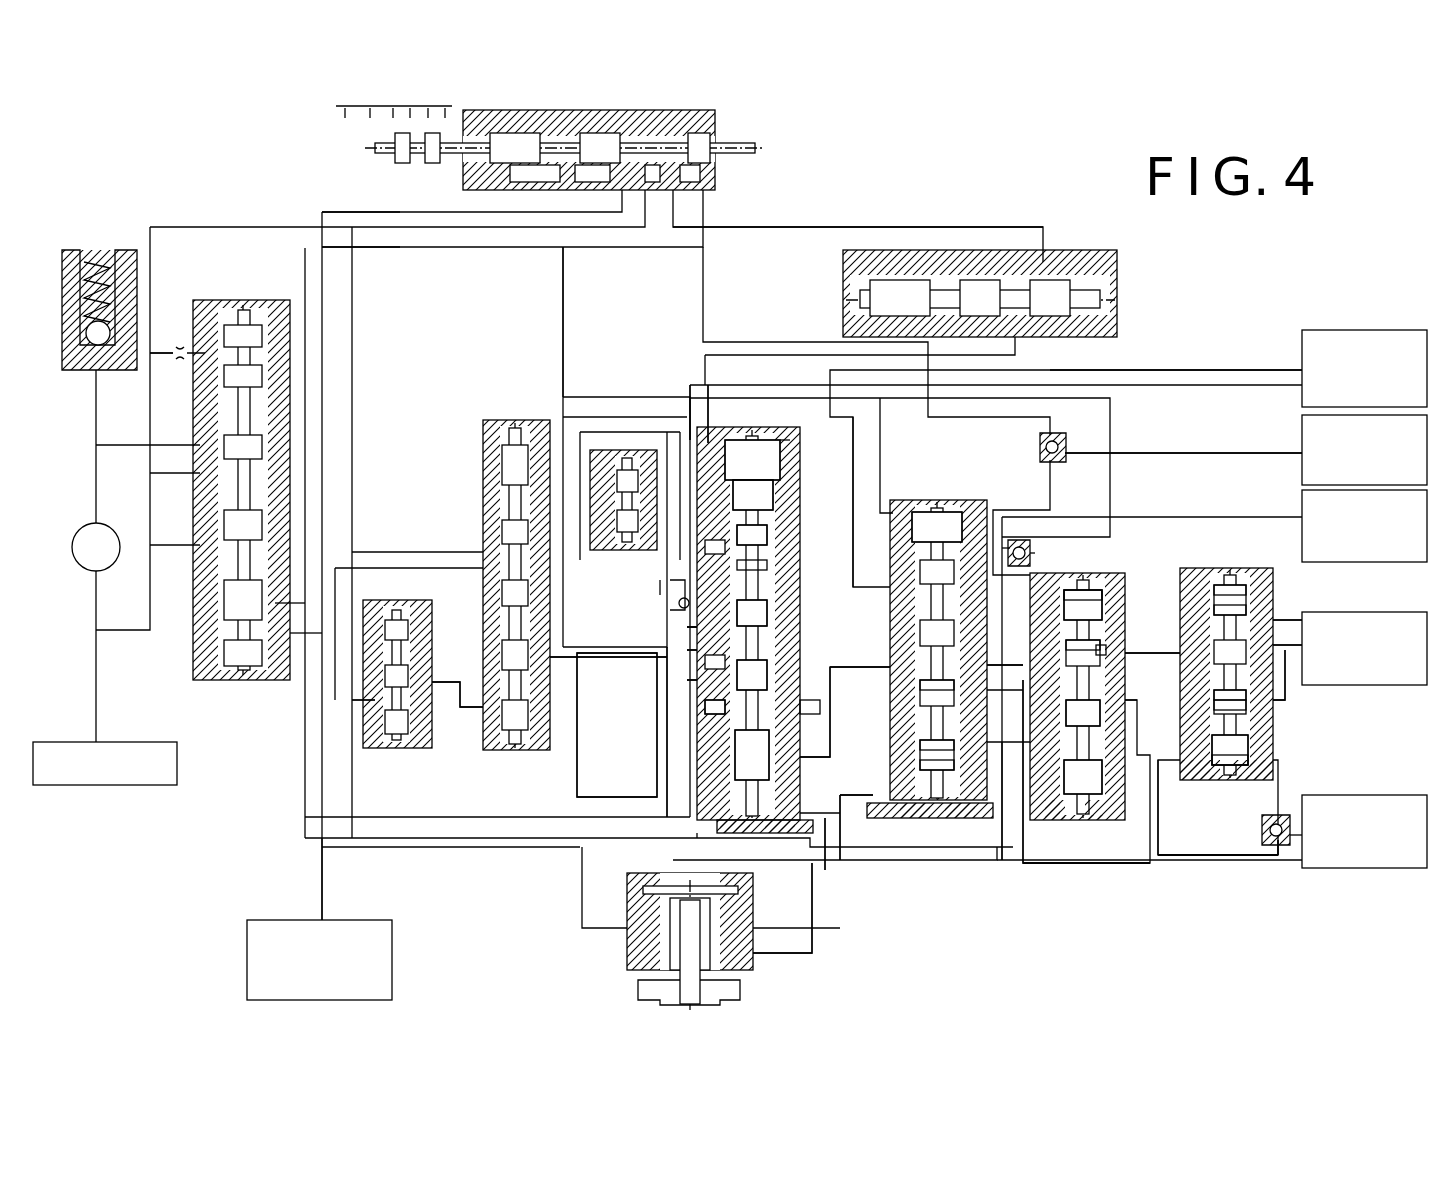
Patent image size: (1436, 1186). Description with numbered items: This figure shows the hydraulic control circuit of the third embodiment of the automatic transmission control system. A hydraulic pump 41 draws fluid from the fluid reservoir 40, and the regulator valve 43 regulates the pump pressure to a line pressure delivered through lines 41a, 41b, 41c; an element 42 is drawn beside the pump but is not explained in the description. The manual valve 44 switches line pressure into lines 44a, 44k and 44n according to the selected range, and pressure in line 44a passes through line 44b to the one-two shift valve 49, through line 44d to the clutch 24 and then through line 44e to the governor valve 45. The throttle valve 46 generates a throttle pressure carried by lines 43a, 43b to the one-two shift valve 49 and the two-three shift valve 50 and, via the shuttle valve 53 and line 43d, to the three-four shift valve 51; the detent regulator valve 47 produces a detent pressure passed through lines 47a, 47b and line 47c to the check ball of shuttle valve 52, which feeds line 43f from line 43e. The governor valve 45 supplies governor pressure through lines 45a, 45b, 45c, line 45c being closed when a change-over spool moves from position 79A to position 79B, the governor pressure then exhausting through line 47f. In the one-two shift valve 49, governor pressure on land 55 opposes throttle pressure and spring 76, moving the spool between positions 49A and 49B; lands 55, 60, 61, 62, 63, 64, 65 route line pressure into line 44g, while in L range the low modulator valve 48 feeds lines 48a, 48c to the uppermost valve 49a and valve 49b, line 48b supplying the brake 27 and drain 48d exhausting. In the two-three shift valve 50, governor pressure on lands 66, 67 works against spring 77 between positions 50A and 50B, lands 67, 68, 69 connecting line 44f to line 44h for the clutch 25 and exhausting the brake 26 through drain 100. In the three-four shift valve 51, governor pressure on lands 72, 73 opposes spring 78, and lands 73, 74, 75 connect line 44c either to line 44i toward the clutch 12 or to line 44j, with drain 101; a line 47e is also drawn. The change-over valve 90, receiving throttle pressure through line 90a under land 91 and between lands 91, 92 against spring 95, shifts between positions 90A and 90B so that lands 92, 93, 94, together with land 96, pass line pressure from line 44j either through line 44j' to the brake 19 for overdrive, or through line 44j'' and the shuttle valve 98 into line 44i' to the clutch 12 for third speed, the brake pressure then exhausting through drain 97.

The clutch 12 is at (1383, 795).
The brake 19 is at (1383, 612).
The clutch 24 is at (392, 960).
The clutch 25 is at (1302, 437).
The brake 26 is at (1302, 512).
The brake 27 is at (1333, 330).
The fluid reservoir 40 is at (112, 790).
The hydraulic pump 41 is at (72, 555).
The line 41a is at (452, 214).
The line 41b is at (172, 358).
The line 41c is at (355, 702).
The relief valve 42 is at (88, 345).
The regulator valve 43 is at (225, 295).
The line 43a is at (603, 657).
The line 43b is at (872, 588).
The line 43d is at (1040, 585).
The line 43e is at (695, 682).
The line 43f is at (658, 590).
The manual valve 44 is at (712, 128).
The line 44a is at (410, 228).
The line 44b is at (688, 820).
The line 44c is at (1120, 870).
The line 44d is at (324, 882).
The line 44e is at (762, 954).
The line 44f is at (885, 672).
The line 44g is at (1016, 650).
The line 44h is at (1170, 453).
The line 44i is at (1218, 876).
The line 44i' is at (1285, 872).
The supply line 44j is at (1159, 634).
The line 44j' is at (1309, 681).
The line 44j'' is at (1304, 700).
The line 44k is at (565, 290).
The line 44n is at (738, 226).
The governor valve 45 is at (616, 987).
The line 45a is at (826, 835).
The line 45b is at (866, 827).
The governor pressure supply line 45c is at (1086, 857).
The throttle valve 46 is at (484, 787).
The detent regulator valve 47 is at (383, 755).
The line 47a is at (445, 680).
The line 47b is at (612, 660).
The line 47c is at (675, 610).
The line 47e is at (995, 812).
The line 47f is at (1015, 720).
The low modulator valve 48 is at (1069, 245).
The line 48a is at (710, 443).
The line 48b is at (1160, 370).
The line 48c is at (702, 445).
The drain 48d is at (700, 520).
The 1-2 shift valve 49 is at (815, 634).
The uppermost valve 49a is at (786, 440).
The valve 49b is at (725, 705).
The lower position 49A is at (750, 836).
The upper position 49B is at (780, 836).
The 2-3 shift valve 50 is at (956, 488).
The lower position 50A is at (915, 822).
The upper position 50B is at (960, 822).
The 3-4 shift valve 51 is at (1115, 565).
The shuttle valve 52 is at (690, 630).
The shuttle valve 53 is at (1025, 545).
The land 55 is at (772, 768).
The land 60 is at (805, 710).
The land 61 is at (770, 670).
The land 62 is at (768, 608).
The land 63 is at (767, 540).
The land 64 is at (773, 495).
The land 65 is at (795, 475).
The land 66 is at (958, 770).
The land 67 is at (958, 730).
The land 68 is at (955, 685).
The land 69 is at (960, 650).
The land 72 is at (1102, 770).
The land 73 is at (1100, 720).
The land 74 is at (1105, 680).
The land 75 is at (1098, 640).
The spring 76 is at (770, 570).
The spring 77 is at (975, 545).
The spring 78 is at (1100, 600).
The lower position 79A is at (1070, 808).
The upper position 79B is at (1095, 808).
The change-over valve 90 is at (1265, 570).
The line 90a is at (1162, 805).
The lower position 90A is at (1208, 770).
The upper position 90B is at (1242, 770).
The land 91 is at (1250, 760).
The land 92 is at (1250, 708).
The land 93 is at (1248, 695).
The land 94 is at (1246, 612).
The spring 95 is at (1246, 590).
The land 96 is at (1250, 745).
The drain 97 is at (1287, 629).
The shuttle valve 98 is at (1282, 815).
The drain 100 is at (838, 712).
The drain 101 is at (1106, 650).